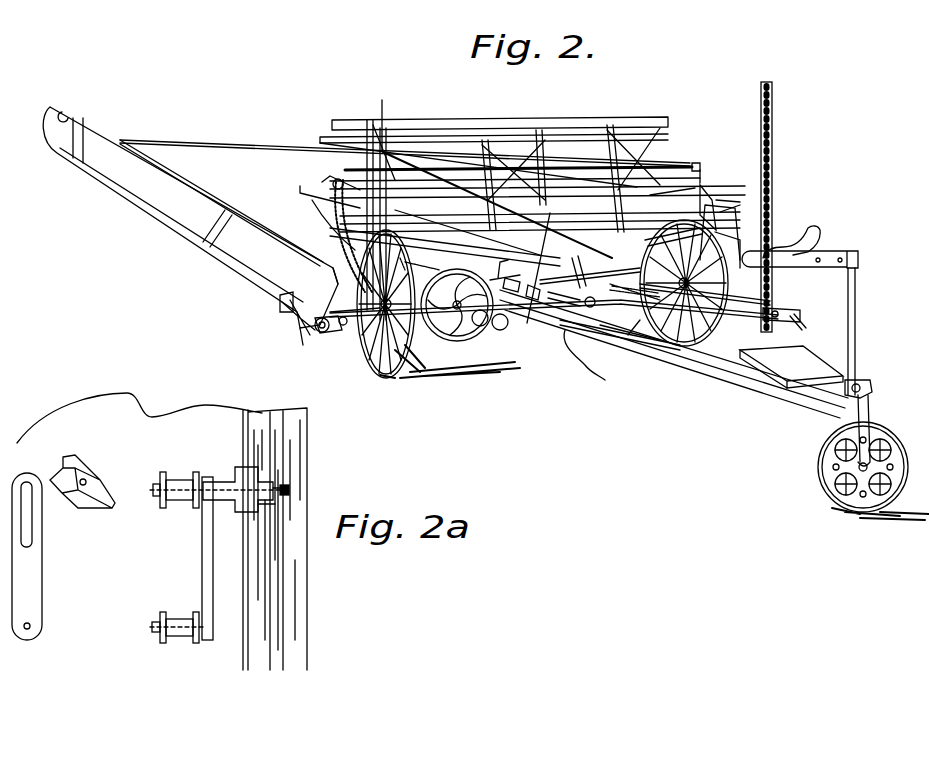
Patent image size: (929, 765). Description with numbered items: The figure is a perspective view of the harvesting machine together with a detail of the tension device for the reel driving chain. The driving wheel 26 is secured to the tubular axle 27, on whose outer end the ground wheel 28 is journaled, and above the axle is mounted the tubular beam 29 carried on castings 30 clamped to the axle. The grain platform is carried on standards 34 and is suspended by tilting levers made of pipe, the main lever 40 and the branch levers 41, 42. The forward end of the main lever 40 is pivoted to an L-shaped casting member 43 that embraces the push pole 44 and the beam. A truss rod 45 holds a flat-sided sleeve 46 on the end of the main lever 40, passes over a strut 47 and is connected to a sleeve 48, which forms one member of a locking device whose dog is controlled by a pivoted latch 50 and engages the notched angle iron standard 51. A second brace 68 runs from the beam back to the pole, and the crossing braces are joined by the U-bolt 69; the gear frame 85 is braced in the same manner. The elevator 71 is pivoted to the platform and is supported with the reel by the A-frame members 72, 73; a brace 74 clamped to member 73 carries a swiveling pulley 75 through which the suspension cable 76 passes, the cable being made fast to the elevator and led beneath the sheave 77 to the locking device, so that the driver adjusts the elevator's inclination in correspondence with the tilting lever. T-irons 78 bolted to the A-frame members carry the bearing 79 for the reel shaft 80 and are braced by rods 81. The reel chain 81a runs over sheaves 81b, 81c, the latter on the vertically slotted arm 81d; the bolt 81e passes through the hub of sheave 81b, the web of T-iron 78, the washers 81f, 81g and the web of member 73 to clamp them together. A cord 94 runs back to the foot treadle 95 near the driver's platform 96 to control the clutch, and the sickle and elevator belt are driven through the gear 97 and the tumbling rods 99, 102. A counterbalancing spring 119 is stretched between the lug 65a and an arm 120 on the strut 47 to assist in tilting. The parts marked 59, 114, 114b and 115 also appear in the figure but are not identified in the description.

In FIG. 2, the driving wheel 26 is at (388, 375).
In FIG. 2, the axle 27 is at (612, 330).
In FIG. 2, the ground wheel 28 is at (722, 272).
In FIG. 2, the tubular beam 29 is at (728, 225).
In FIG. 2, the castings 30 is at (720, 255).
In FIG. 2, the standards 34 is at (660, 343).
In FIG. 2, the main lever 40 is at (758, 305).
In FIG. 2, the branch lever 41 is at (533, 305).
In FIG. 2, the branch lever 42 is at (565, 308).
In FIG. 2, the casting member 43 is at (510, 278).
In FIG. 2, the push pole 44 is at (715, 345).
In FIG. 2, the truss rod 45 is at (592, 270).
In FIG. 2, the sleeve 46 is at (499, 270).
In FIG. 2, the strut 47 is at (576, 262).
In FIG. 2, the sleeve 48 is at (783, 306).
In FIG. 2, the pivoted latch 50 is at (796, 326).
In FIG. 2, the angle iron standard 51 is at (773, 160).
In FIG. 2, the spring 59 is at (618, 250).
In FIG. 2, the lug 65a is at (587, 356).
In FIG. 2, the second brace 68 is at (591, 308).
In FIG. 2, the U-bolt 69 is at (487, 327).
In FIG. 2, the elevator 71 is at (185, 225).
In FIG. 2, the A-frame member 72 is at (715, 198).
In FIG. 2, the A-frame member 73 is at (410, 218).
In FIG. 2A, the A-frame member 73 is at (288, 580).
In FIG. 2, the brace 74 is at (405, 167).
In FIG. 2, the swiveling pulley 75 is at (384, 121).
In FIG. 2, the suspension cable 76 is at (244, 147).
In FIG. 2, the sheave 77 is at (640, 332).
In FIG. 2, the T-irons 78 is at (700, 200).
In FIG. 2A, the T-irons 78 is at (113, 502).
In FIG. 2, the bearing 79 is at (665, 190).
In FIG. 2, the reel shaft 80 is at (604, 170).
In FIG. 2, the rods 81 is at (715, 218).
In FIG. 2, the reel chain 81a is at (312, 204).
In FIG. 2A, the reel chain 81a is at (42, 545).
In FIG. 2A, the sheave 81b is at (158, 476).
In FIG. 2A, the sheave 81c is at (160, 620).
In FIG. 2A, the arm 81d is at (202, 578).
In FIG. 2A, the bolt 81e is at (288, 489).
In FIG. 2A, the washer 81f is at (262, 505).
In FIG. 2A, the washer 81g is at (238, 472).
In FIG. 2, the gear frame 85 is at (372, 340).
In FIG. 2, the cord 94 is at (770, 380).
In FIG. 2, the foot treadle 95 is at (838, 392).
In FIG. 2, the driver's platform 96 is at (812, 352).
In FIG. 2, the gear 97 is at (462, 341).
In FIG. 2, the tumbling rod 99 is at (352, 335).
In FIG. 2, the tumbling rod 102 is at (298, 325).
In FIG. 2, the chain 114 is at (338, 222).
In FIG. 2, the sprocket 114b is at (332, 180).
In FIG. 2, the rod 115 is at (430, 238).
In FIG. 2, the spring 119 is at (550, 261).
In FIG. 2, the arm 120 is at (507, 328).